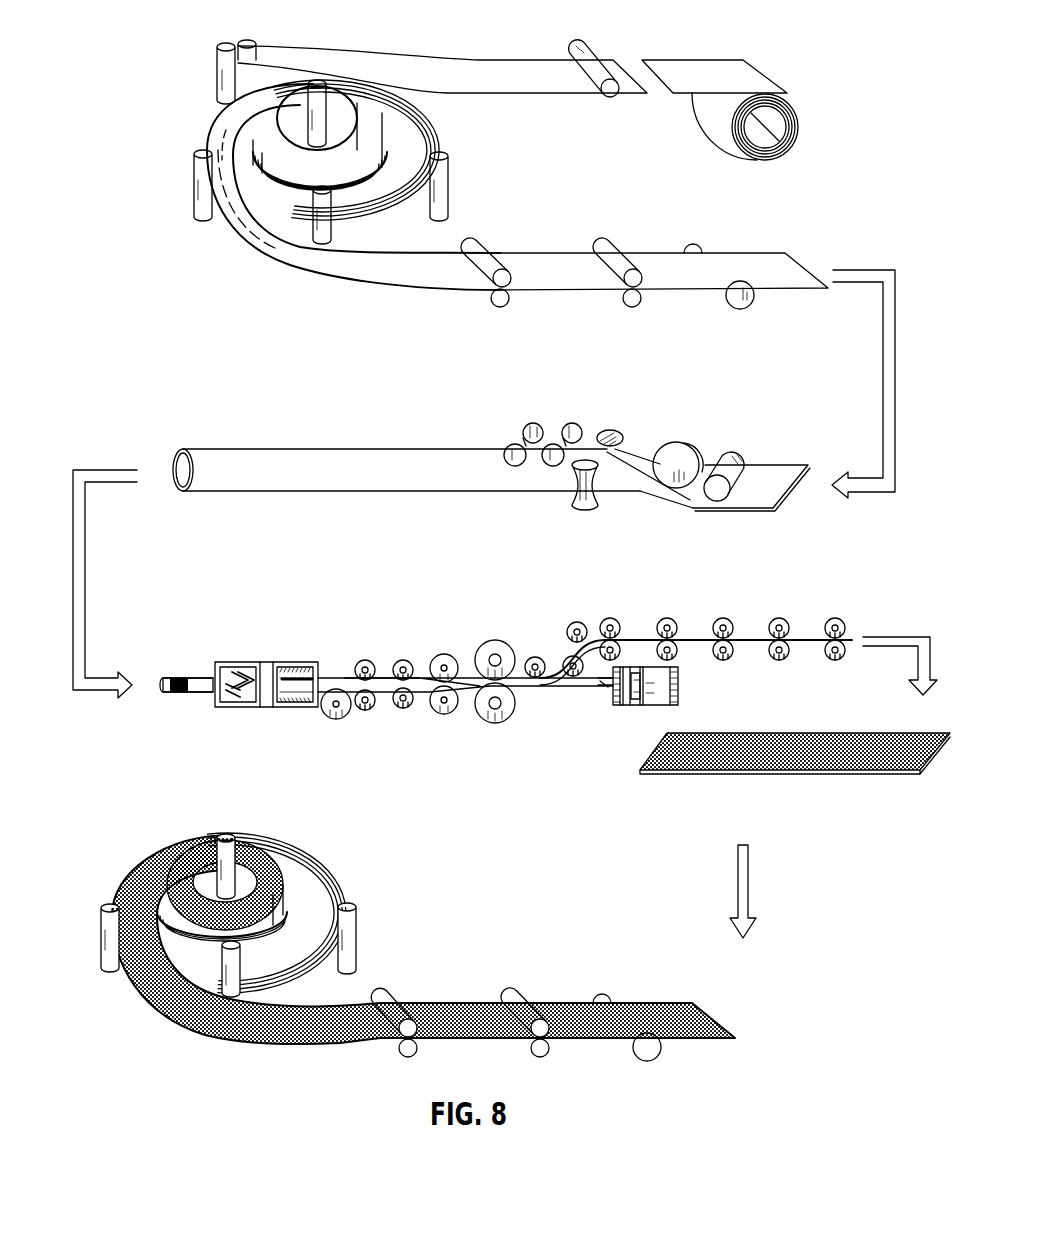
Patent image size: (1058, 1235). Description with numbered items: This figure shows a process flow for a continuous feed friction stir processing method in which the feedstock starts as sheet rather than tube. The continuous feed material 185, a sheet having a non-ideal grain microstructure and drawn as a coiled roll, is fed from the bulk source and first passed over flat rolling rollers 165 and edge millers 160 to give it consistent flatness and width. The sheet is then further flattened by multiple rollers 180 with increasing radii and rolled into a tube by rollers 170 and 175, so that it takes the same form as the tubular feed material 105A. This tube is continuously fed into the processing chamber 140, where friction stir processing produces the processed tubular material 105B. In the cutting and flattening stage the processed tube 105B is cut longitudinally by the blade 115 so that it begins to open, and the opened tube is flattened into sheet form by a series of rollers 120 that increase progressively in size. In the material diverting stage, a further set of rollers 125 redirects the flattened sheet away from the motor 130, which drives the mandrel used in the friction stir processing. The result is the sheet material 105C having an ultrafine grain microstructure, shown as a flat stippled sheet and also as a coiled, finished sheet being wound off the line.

The tubular feed material 105A is at (203, 677).
The friction stir processed tubular material 105B is at (347, 677).
The UFG microstructure sheet material 105C is at (817, 770).
The blade 115 is at (336, 720).
The rollers 120 is at (495, 642).
The rollers 125 is at (723, 618).
The motor 130 is at (688, 686).
The processing chamber 140 is at (235, 656).
The edge millers 160 is at (690, 250).
The rollers 165 is at (450, 200).
The rollers 170 is at (600, 437).
The rollers 175 is at (572, 424).
The rollers 180 is at (730, 450).
The continuous feed material 185 is at (781, 76).